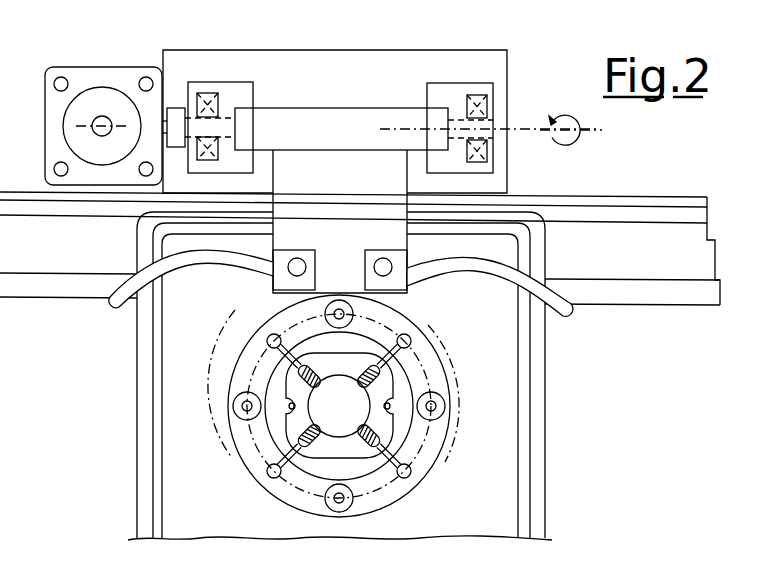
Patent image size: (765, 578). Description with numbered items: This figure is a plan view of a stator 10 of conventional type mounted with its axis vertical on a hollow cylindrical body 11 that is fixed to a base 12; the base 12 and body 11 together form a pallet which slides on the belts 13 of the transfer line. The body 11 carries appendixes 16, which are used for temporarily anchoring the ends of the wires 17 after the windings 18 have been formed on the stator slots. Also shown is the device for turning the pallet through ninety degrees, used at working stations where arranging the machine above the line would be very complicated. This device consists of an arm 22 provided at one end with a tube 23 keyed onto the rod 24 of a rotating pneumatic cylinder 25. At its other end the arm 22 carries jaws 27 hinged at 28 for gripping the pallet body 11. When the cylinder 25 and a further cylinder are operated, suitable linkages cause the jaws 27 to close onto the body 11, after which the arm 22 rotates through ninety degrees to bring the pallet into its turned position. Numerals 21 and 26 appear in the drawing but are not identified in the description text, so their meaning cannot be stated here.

The stator 10 is at (392, 384).
The hollow cylindrical body 11 is at (428, 440).
The base 12 is at (507, 404).
The belts 13 is at (645, 244).
The appendixes 16 is at (268, 337).
The wires 17 is at (287, 367).
The windings 18 is at (358, 385).
The drive unit 21 is at (347, 87).
The arm 22 is at (392, 182).
The tube 23 is at (300, 118).
The rod 24 is at (506, 126).
The cylinder 25 is at (107, 94).
The bearing 26 is at (478, 96).
The jaws 27 is at (183, 272).
The hinge 28 is at (301, 257).